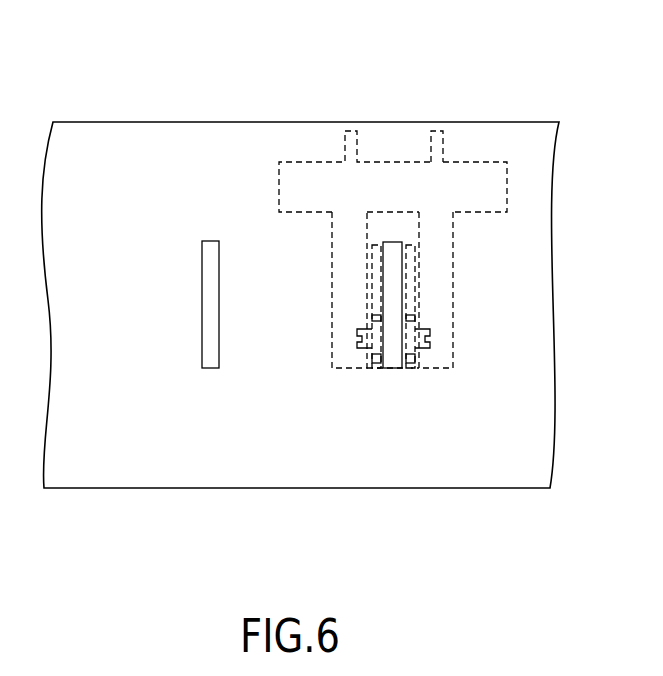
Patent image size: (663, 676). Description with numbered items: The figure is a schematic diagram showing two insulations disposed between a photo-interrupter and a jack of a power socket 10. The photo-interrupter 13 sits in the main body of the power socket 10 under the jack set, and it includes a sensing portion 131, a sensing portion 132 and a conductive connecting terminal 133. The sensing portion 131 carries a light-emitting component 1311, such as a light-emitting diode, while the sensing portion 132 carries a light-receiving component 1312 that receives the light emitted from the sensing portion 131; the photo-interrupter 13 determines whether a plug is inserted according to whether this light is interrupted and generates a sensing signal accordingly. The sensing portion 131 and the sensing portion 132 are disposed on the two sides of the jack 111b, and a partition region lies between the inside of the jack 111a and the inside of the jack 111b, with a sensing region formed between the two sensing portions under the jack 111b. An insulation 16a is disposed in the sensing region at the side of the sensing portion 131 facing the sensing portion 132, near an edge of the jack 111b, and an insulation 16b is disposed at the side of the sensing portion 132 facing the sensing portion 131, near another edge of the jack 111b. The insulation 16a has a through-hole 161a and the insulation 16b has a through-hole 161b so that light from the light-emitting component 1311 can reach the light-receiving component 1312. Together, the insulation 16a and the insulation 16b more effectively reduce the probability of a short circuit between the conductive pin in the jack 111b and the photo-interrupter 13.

The power socket 10 is at (496, 88).
The photo-interrupter 13 is at (392, 187).
The conductive connecting terminal 133 is at (441, 146).
The sensing portion 131 is at (347, 254).
The sensing portion 132 is at (441, 254).
The jack 111a is at (213, 350).
The jack 111b is at (391, 356).
The insulation 16a is at (376, 368).
The insulation 16b is at (412, 281).
The through-hole 161a is at (372, 322).
The through-hole 161b is at (425, 321).
The light-emitting component 1311 is at (352, 341).
The light-receiving component 1312 is at (430, 342).